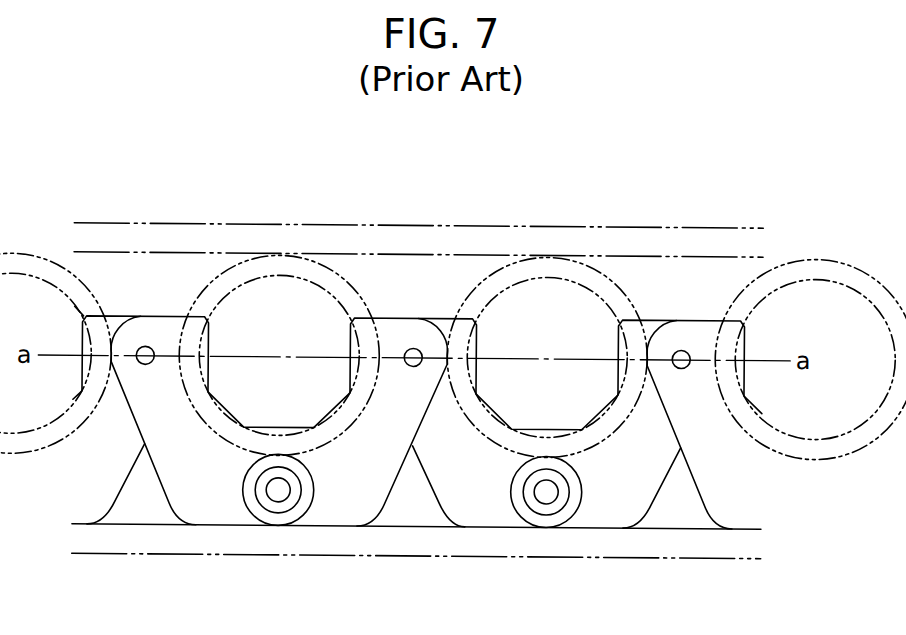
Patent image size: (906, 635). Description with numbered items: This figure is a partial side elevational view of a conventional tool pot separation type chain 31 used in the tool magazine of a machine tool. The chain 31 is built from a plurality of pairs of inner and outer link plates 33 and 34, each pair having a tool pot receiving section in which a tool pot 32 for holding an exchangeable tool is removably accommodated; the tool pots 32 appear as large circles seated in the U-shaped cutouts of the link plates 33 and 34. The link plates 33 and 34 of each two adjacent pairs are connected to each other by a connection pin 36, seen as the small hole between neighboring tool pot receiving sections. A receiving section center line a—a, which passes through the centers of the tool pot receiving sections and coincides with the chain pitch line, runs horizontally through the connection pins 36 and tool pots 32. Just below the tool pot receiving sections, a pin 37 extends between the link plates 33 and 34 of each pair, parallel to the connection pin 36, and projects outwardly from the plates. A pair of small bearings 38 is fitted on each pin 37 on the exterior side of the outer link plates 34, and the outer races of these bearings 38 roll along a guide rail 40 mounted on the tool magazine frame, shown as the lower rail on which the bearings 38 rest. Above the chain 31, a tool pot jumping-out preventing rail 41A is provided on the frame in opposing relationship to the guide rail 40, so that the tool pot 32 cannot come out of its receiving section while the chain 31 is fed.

The tool pot separation type chain 31 is at (452, 219).
The tool pot 32 is at (272, 299).
The inner link plate 33 is at (632, 500).
The outer link plate 34 is at (210, 504).
The connection pin 36 is at (405, 351).
The pin 37 is at (540, 494).
The small bearing 38 is at (548, 521).
The guide rail 40 is at (694, 545).
The tool pot jumping-out preventing rail 41A is at (645, 243).